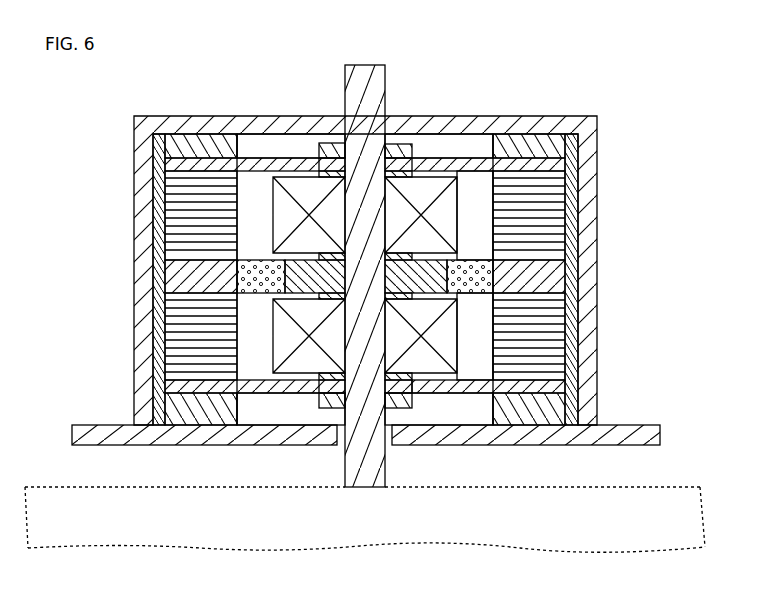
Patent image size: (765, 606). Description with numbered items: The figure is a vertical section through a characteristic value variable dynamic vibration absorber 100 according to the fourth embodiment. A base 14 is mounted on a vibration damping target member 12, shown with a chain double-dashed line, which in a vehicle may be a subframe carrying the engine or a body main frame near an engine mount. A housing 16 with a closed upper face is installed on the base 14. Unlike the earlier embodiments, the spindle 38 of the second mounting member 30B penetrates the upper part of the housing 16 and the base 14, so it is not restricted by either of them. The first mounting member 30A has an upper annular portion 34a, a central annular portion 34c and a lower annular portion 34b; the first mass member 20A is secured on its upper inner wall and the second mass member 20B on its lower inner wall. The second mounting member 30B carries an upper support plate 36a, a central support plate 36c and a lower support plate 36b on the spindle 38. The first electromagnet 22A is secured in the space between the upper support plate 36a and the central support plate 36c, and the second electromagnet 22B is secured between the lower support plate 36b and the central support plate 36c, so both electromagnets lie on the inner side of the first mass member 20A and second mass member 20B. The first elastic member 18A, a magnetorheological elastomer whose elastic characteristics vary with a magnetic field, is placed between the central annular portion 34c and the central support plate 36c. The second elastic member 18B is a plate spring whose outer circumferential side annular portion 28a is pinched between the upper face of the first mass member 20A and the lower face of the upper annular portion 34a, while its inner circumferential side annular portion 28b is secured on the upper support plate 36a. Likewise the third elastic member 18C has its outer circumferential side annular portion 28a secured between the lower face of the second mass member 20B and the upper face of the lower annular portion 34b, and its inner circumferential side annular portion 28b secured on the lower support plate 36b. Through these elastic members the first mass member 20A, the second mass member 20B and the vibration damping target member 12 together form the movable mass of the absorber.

The actuator 100 is at (96, 103).
The vibration damping target member 12 is at (48, 485).
The base 14 is at (633, 425).
The housing 16 is at (185, 116).
The first elastic member 18A is at (463, 293).
The second elastic member 18B is at (453, 149).
The third elastic member 18C is at (437, 396).
The first mass member 20A is at (566, 203).
The second mass member 20B is at (566, 330).
The first electromagnet 22A is at (285, 206).
The second electromagnet 22B is at (285, 325).
The outer circumferential side annular portion 28a is at (513, 160).
The inner circumferential side annular portion 28b is at (401, 168).
The first mounting member 30A is at (537, 134).
The second mounting member 30B is at (326, 143).
The upper annular portion 34a is at (548, 150).
The lower annular portion 34b is at (558, 394).
The central annular portion 34c is at (556, 274).
The upper support plate 36a is at (397, 150).
The lower support plate 36b is at (402, 409).
The central support plate 36c is at (432, 282).
The spindle 38 is at (366, 80).